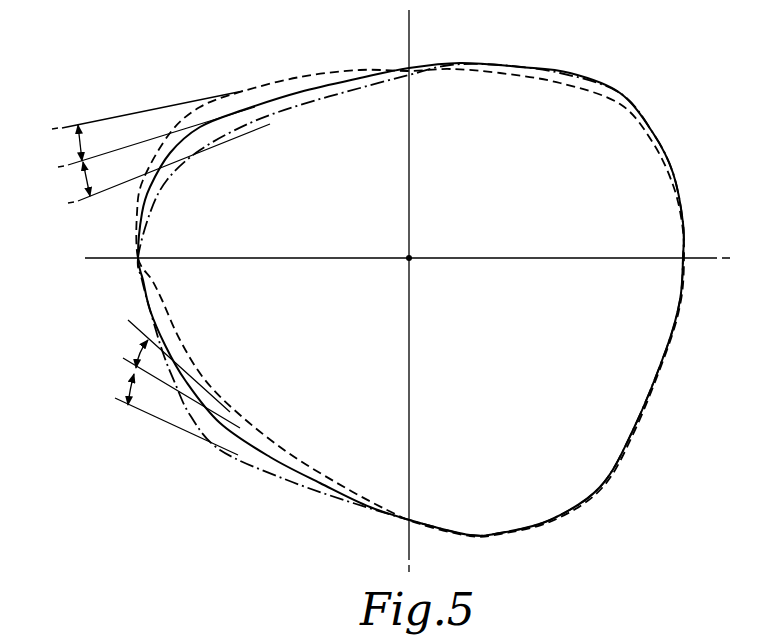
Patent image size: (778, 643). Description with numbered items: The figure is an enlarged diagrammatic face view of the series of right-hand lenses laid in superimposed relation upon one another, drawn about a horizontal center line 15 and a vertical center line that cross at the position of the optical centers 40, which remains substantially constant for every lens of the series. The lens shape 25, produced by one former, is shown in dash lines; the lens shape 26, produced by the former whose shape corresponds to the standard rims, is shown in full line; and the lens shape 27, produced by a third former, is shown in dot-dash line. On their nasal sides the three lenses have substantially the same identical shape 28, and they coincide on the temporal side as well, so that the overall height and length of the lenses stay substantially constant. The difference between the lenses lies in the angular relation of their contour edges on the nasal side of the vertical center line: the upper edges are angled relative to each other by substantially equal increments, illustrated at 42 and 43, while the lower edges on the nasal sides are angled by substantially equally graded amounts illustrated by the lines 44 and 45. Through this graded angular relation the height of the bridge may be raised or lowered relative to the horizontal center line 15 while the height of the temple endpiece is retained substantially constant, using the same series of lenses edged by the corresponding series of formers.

The horizontal center line 15 is at (700, 258).
The lens shape 25 is at (280, 80).
The lens shape 26 is at (313, 88).
The lens shape 27 is at (333, 95).
The nasal side shape 28 is at (130, 304).
The optical center 40 is at (414, 255).
The angle increment of upper edge 42 is at (78, 148).
The angle increment of upper edge 43 is at (82, 178).
The line of lower edge angle 44 is at (137, 355).
The line of lower edge angle 45 is at (129, 388).